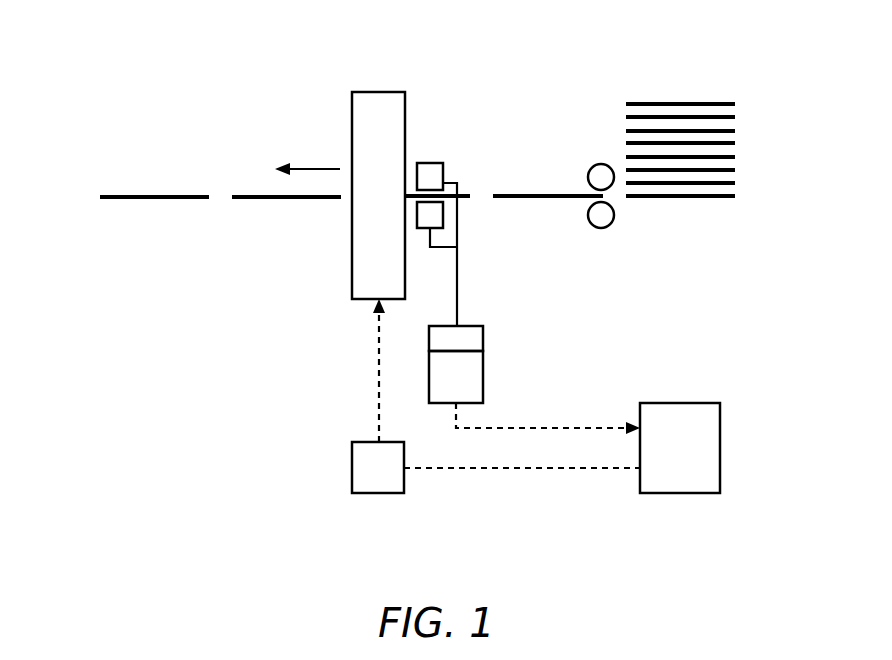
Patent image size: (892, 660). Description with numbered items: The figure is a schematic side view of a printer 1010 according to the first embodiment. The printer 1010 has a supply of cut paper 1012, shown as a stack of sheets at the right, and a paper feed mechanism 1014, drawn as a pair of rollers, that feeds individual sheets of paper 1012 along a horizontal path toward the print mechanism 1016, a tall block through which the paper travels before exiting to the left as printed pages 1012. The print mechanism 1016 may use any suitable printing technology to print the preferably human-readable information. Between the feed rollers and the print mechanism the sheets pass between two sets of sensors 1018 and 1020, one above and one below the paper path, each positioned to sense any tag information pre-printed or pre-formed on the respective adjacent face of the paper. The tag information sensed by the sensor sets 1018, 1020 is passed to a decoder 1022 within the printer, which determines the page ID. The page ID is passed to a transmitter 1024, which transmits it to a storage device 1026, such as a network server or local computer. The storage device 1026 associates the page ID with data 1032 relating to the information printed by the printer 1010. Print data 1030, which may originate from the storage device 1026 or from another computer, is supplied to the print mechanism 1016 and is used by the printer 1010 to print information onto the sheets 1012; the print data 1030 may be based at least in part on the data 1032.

The printer 1010 is at (605, 283).
The cut paper 1012 is at (158, 197).
The paper feed mechanism 1014 is at (601, 152).
The print mechanism 1016 is at (405, 113).
The first set of sensors 1018 is at (443, 172).
The second set of sensors 1020 is at (443, 215).
The decoder 1022 is at (483, 336).
The transmitter 1024 is at (483, 376).
The storage device 1026 is at (683, 493).
The print data 1030 is at (379, 368).
The data 1032 is at (380, 493).